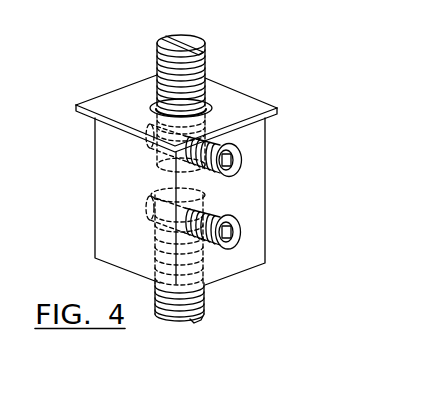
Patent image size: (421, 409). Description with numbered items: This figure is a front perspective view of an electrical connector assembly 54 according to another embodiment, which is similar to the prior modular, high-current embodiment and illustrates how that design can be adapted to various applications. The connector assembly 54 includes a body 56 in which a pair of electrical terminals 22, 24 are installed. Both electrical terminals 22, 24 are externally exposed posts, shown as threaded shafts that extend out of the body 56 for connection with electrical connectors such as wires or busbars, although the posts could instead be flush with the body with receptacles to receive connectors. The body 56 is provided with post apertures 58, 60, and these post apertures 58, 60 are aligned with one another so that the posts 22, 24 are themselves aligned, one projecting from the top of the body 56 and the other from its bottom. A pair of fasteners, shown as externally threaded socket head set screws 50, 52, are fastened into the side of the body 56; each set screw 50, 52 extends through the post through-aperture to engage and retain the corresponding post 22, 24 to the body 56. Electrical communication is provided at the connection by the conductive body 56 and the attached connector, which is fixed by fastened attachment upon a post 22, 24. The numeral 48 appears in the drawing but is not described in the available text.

The electrical terminal 22 is at (211, 58).
The electrical terminal 24 is at (211, 301).
The adjacent frame member 48 is at (0, 0).
The socket head set screw 50 is at (236, 160).
The socket head set screw 52 is at (237, 232).
The connector assembly 54 is at (312, 95).
The body 56 is at (270, 206).
The post aperture 58 is at (152, 102).
The post aperture 60 is at (155, 188).